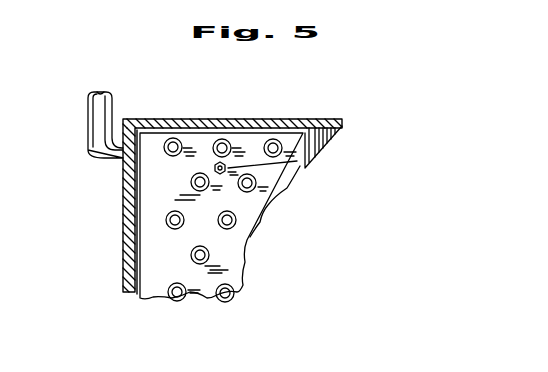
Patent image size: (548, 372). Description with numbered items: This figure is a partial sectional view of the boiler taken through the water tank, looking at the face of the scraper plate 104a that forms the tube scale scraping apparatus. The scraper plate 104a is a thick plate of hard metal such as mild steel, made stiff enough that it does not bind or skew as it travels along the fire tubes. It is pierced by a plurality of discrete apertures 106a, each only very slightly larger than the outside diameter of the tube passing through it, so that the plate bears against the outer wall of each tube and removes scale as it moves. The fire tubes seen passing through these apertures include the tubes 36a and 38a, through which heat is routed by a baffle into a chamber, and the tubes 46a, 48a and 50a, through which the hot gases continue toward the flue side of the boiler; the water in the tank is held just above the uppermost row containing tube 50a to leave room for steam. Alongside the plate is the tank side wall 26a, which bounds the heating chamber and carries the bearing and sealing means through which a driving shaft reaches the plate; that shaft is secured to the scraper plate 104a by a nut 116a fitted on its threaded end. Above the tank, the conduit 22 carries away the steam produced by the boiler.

The conduit 22 is at (88, 110).
The fire tube 50a is at (173, 138).
The fire tube 48a is at (191, 182).
The nut 116a is at (298, 171).
The side wall 26a is at (320, 144).
The scraper plate 104a is at (247, 217).
The aperture 106a is at (236, 226).
The fire tube 46a is at (172, 228).
The fire tube 38a is at (191, 258).
The fire tube 36a is at (175, 302).